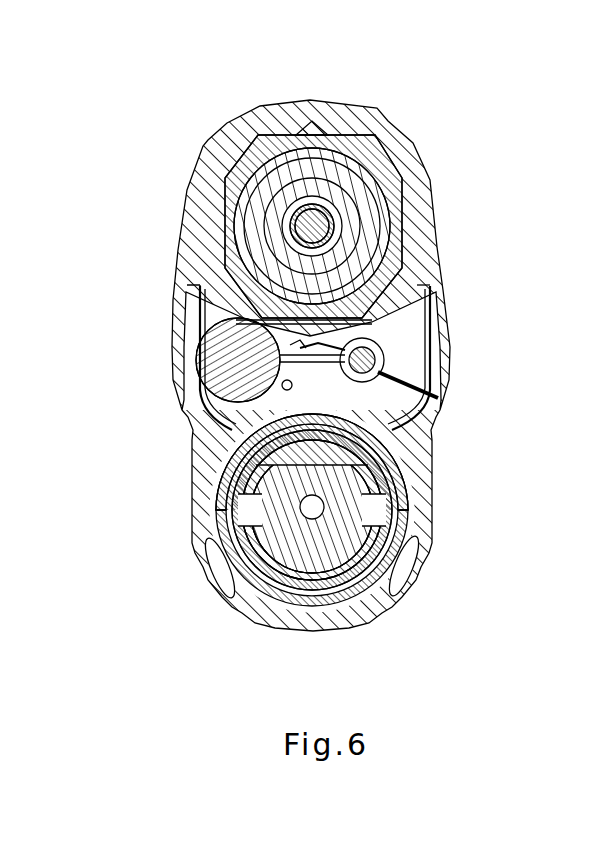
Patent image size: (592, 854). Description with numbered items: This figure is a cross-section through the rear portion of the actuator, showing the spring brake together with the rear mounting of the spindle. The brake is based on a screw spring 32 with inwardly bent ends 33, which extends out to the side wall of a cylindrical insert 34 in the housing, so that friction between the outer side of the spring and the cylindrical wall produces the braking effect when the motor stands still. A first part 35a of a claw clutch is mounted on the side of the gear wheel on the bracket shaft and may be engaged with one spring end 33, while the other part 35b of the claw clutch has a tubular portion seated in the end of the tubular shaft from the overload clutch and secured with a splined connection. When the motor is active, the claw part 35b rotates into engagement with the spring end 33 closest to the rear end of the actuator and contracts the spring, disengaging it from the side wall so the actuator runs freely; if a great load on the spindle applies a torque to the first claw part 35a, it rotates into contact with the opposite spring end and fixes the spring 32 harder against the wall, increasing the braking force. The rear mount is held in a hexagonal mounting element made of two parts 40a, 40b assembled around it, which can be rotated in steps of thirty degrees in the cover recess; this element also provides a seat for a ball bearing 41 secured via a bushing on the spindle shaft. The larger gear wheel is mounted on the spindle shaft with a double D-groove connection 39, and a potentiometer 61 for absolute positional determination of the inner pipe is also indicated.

The first part of mounting element 40a is at (227, 132).
The second part of mounting element 40b is at (370, 135).
The ball bearing 41 is at (262, 187).
The double D-groove connection 39 is at (297, 223).
The potentiometer 61 is at (220, 367).
The inwardly bent ends 33 is at (240, 495).
The screw spring 32 is at (272, 534).
The cylindrical insert 34 is at (258, 568).
The first part of claw clutch 35a is at (387, 471).
The second part of claw clutch 35b is at (387, 549).